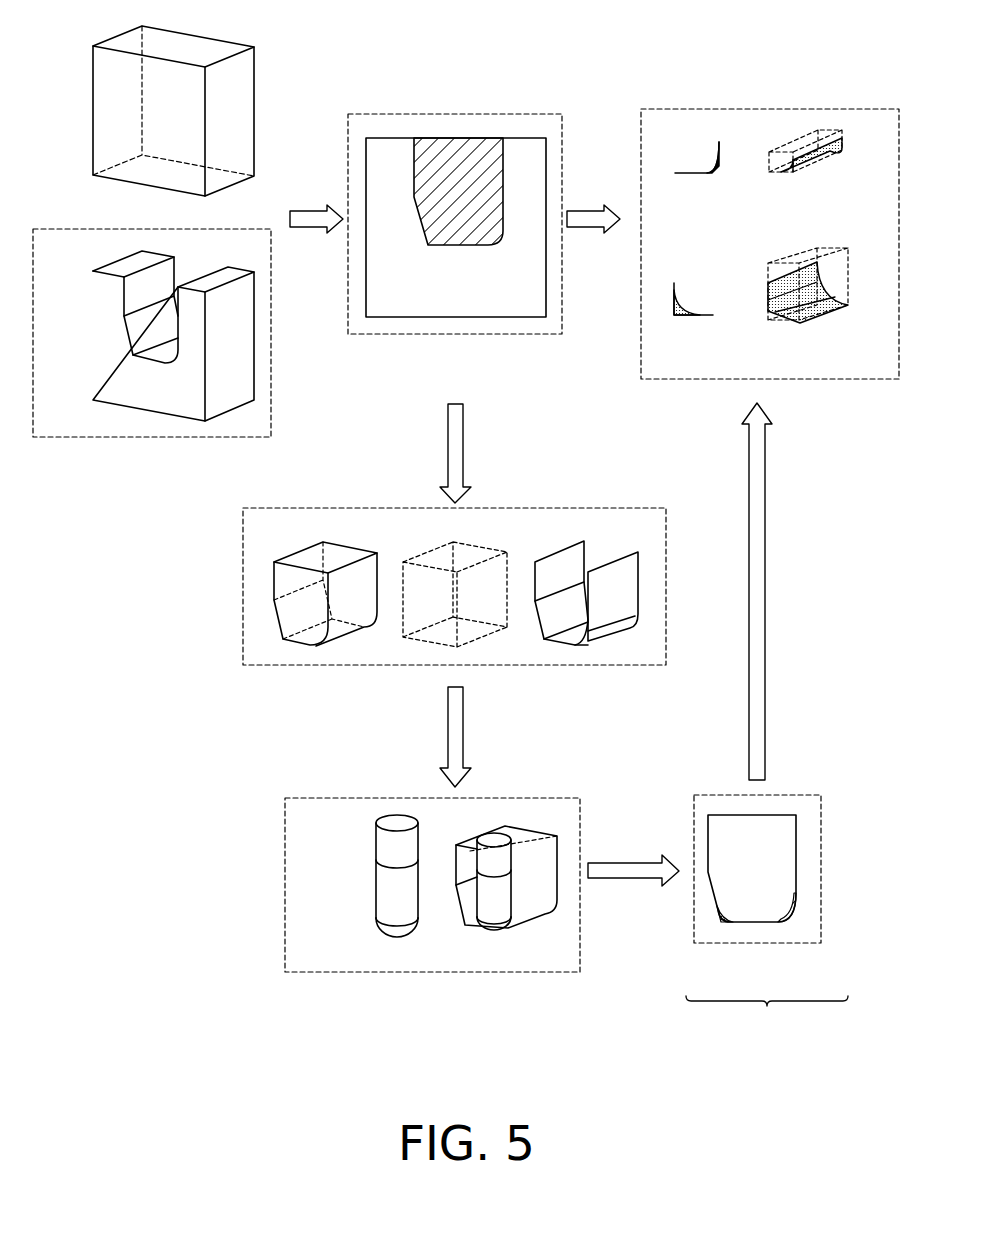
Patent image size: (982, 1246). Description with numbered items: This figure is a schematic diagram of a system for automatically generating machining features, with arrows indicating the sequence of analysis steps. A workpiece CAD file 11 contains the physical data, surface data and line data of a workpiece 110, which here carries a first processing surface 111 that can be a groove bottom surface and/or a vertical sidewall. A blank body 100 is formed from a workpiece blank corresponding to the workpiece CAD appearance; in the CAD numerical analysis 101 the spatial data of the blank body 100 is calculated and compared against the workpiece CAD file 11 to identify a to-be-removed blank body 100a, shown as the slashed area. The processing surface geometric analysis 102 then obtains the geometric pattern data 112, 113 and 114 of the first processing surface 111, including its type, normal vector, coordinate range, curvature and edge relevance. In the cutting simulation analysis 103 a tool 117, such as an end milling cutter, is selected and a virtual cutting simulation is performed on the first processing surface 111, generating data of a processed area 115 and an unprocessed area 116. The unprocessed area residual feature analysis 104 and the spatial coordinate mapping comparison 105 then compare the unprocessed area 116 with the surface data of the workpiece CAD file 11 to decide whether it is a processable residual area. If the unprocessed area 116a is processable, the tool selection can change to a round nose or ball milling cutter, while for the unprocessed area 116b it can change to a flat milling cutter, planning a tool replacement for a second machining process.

The workpiece CAD file 11 is at (92, 229).
The blank body 100 is at (111, 124).
The to-be-removed blank body 100a is at (460, 150).
The CAD numerical analysis 101 is at (370, 113).
The processing surface geometric analysis 102 is at (243, 583).
The cutting simulation analysis 103 is at (285, 880).
The unprocessed area residual feature analysis 104 is at (803, 793).
The spatial coordinate mapping comparison 105 is at (663, 108).
The workpiece 110 is at (124, 369).
The first processing surface 111 is at (124, 298).
The geometric pattern data 112 is at (301, 661).
The geometric pattern data 113 is at (427, 661).
The geometric pattern data 114 is at (565, 661).
The processed area 115 is at (799, 859).
The unprocessed area 116 is at (767, 1017).
The unprocessed area 116a is at (713, 177).
The unprocessed area 116b is at (687, 320).
The tool 117 is at (376, 840).